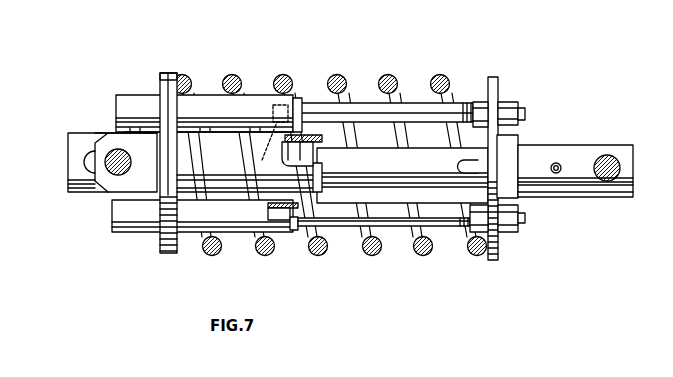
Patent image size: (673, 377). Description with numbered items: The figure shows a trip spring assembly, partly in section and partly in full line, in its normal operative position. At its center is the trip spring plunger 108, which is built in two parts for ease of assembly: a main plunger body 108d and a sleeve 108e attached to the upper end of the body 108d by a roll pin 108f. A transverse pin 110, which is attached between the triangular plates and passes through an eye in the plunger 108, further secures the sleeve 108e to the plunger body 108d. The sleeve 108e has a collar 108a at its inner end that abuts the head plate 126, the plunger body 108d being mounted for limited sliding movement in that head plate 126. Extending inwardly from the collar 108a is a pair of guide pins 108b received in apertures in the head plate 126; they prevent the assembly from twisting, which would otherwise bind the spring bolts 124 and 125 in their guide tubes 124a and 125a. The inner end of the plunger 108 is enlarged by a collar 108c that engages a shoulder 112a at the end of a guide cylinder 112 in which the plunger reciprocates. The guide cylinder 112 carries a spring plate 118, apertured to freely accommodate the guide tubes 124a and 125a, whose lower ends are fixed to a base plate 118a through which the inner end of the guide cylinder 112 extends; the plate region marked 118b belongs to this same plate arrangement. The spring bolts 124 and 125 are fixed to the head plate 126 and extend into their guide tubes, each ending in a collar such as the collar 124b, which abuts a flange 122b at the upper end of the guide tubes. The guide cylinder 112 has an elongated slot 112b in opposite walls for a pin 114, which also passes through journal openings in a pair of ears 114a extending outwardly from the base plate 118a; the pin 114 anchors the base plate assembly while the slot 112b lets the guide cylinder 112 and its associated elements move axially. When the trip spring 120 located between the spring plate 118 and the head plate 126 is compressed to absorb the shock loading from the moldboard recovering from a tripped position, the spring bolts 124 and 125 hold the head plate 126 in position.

The trip spring plunger 108 is at (438, 190).
The collar 108a is at (506, 145).
The guide pins 108b is at (476, 168).
The collar 108c is at (311, 153).
The main plunger body 108d is at (456, 150).
The sleeve 108e is at (553, 193).
The roll pin 108f is at (561, 171).
The transverse pin 110 is at (619, 160).
The guide cylinder 112 is at (260, 166).
The shoulder 112a is at (322, 137).
The elongated slot 112b is at (87, 153).
The pin 114 is at (112, 182).
The ears 114a is at (137, 186).
The spring plate 118 is at (177, 73).
The base plate 118a is at (162, 72).
The arm top 118b is at (108, 137).
The trip spring 120 is at (330, 82).
The flange 122b is at (300, 110).
The spring bolt 124 is at (415, 110).
The guide tube 124a is at (130, 96).
The collar 124b is at (251, 144).
The spring bolt 125 is at (403, 227).
The guide tube 125a is at (140, 223).
The head plate 126 is at (496, 248).